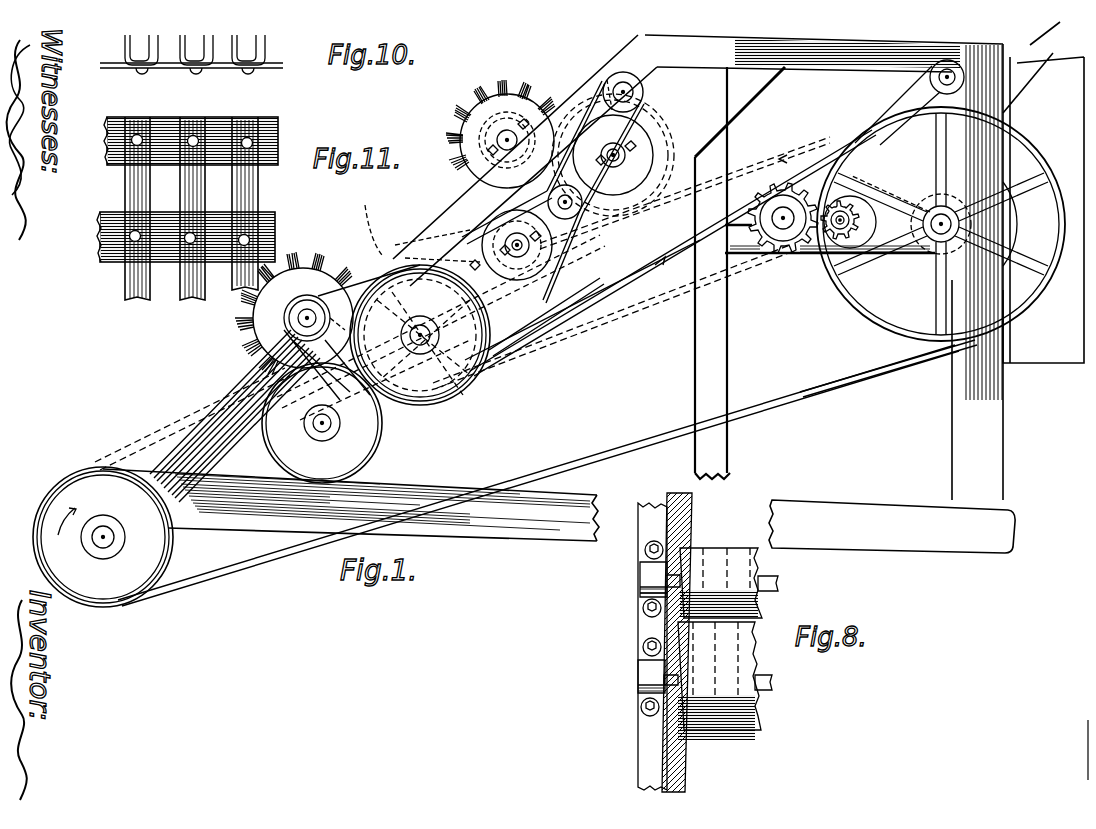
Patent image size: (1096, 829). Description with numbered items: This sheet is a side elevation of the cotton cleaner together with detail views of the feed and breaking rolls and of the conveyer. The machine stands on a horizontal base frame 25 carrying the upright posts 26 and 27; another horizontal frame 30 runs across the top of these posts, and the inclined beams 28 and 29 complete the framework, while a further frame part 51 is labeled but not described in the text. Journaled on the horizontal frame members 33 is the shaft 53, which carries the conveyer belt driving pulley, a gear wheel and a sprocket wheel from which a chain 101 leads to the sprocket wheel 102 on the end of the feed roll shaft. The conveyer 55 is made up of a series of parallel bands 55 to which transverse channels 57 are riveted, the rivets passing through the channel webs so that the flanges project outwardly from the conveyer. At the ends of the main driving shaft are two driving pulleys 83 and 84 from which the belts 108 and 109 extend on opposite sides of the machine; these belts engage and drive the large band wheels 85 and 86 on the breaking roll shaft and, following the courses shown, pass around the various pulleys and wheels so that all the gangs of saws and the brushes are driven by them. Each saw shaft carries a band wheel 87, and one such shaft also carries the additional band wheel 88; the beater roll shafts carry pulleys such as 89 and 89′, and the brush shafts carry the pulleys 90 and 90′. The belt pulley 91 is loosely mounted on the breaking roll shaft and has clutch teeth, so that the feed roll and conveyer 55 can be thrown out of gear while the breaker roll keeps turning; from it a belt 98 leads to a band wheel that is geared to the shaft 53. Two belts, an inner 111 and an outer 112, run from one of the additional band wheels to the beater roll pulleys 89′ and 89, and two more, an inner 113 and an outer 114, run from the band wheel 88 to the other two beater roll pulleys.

In FIG. 1, the horizontal base frame 25 is at (892, 526).
In FIG. 1, the upright post 26 is at (712, 273).
In FIG. 1, the upright post 27 is at (977, 272).
In FIG. 1, the inclined beam 28 is at (740, 112).
In FIG. 1, the inclined beam 29 is at (525, 160).
In FIG. 1, the horizontal frame 30 is at (824, 53).
In FIG. 1, the horizontal frame members 33 is at (748, 256).
In FIG. 1, the frame 51 is at (1062, 363).
In FIG. 1, the shaft 53 is at (782, 225).
In FIG. 10, the conveyer 55 is at (276, 68).
In FIG. 11, the conveyer 55 is at (263, 215).
In FIG. 10, the transverse channels 57 is at (265, 52).
In FIG. 11, the transverse channels 57 is at (132, 181).
In FIG. 1, the driving pulley 83 is at (165, 590).
In FIG. 1, the driving pulley 84 is at (172, 546).
In FIG. 1, the band wheel 85 is at (900, 330).
In FIG. 1, the band wheel 86 is at (890, 302).
In FIG. 1, the band wheel 87 is at (613, 155).
In FIG. 1, the additional band wheel 88 is at (700, 120).
In FIG. 1, the beater roll pulley 89 is at (648, 104).
In FIG. 1, the beater roll pulley 89′ is at (622, 258).
In FIG. 1, the brush pulley 90 is at (490, 140).
In FIG. 1, the brush pulley 90′ is at (275, 326).
In FIG. 1, the belt pulley 91 is at (958, 205).
In FIG. 1, the belt 98 is at (835, 250).
In FIG. 1, the chain 101 is at (890, 140).
In FIG. 1, the sprocket wheel 102 is at (930, 82).
In FIG. 1, the belt 108 is at (612, 450).
In FIG. 1, the belt 109 is at (755, 168).
In FIG. 1, the inner belt 111 is at (420, 250).
In FIG. 1, the outer belt 112 is at (420, 226).
In FIG. 1, the inner belt 113 is at (430, 235).
In FIG. 1, the outer belt 114 is at (366, 219).